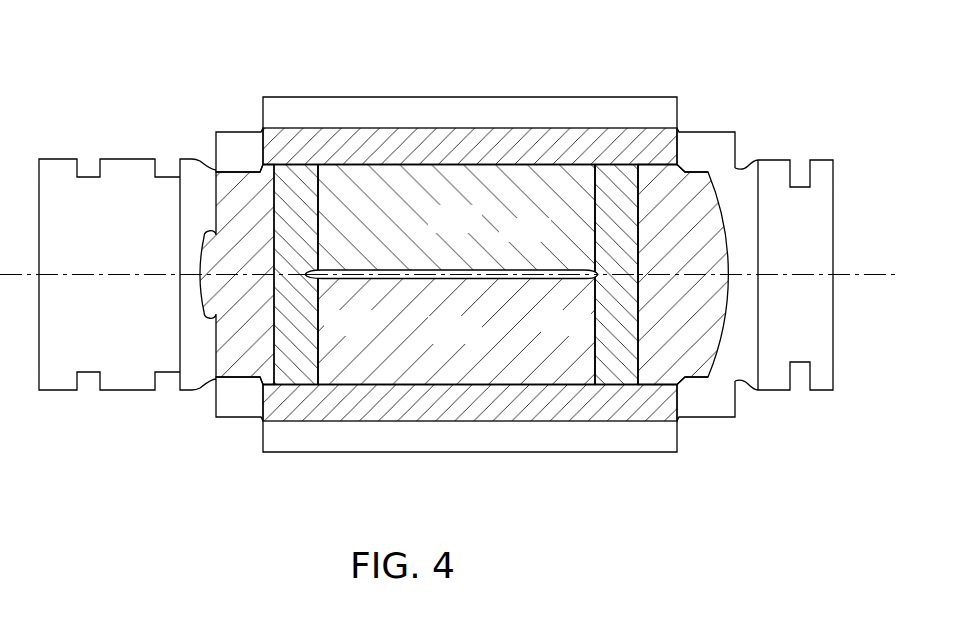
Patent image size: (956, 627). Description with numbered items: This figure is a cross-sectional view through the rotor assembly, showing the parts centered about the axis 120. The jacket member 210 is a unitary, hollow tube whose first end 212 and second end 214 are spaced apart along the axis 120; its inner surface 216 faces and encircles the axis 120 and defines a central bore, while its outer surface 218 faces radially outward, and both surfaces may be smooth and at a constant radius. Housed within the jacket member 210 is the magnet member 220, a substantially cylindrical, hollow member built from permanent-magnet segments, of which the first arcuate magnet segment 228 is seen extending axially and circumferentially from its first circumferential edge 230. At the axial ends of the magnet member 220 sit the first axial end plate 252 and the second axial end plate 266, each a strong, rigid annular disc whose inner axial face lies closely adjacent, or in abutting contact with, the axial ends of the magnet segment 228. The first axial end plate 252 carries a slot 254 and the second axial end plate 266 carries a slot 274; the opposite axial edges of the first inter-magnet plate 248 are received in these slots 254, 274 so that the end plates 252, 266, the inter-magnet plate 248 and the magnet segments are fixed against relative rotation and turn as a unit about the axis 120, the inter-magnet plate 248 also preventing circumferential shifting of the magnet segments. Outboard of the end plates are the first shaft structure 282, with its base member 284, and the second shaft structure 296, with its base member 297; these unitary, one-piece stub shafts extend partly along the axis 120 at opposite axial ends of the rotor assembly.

The axis 120 is at (858, 272).
The jacket member 210 is at (500, 103).
The first end 212 is at (678, 113).
The second end 214 is at (263, 113).
The inner surface 216 is at (407, 168).
The outer surface 218 is at (338, 128).
The magnet member 220 is at (512, 178).
The first arcuate magnet segment 228 is at (478, 230).
The first circumferential edge 230 is at (478, 341).
The first inter-magnet plate 248 is at (512, 271).
The first axial end plate 252 is at (617, 352).
The slot 254 is at (571, 279).
The second axial end plate 266 is at (295, 353).
The slot 274 is at (343, 279).
The first shaft structure 282 is at (786, 137).
The base member 284 is at (687, 365).
The second shaft structure 296 is at (106, 137).
The base member 297 is at (240, 370).